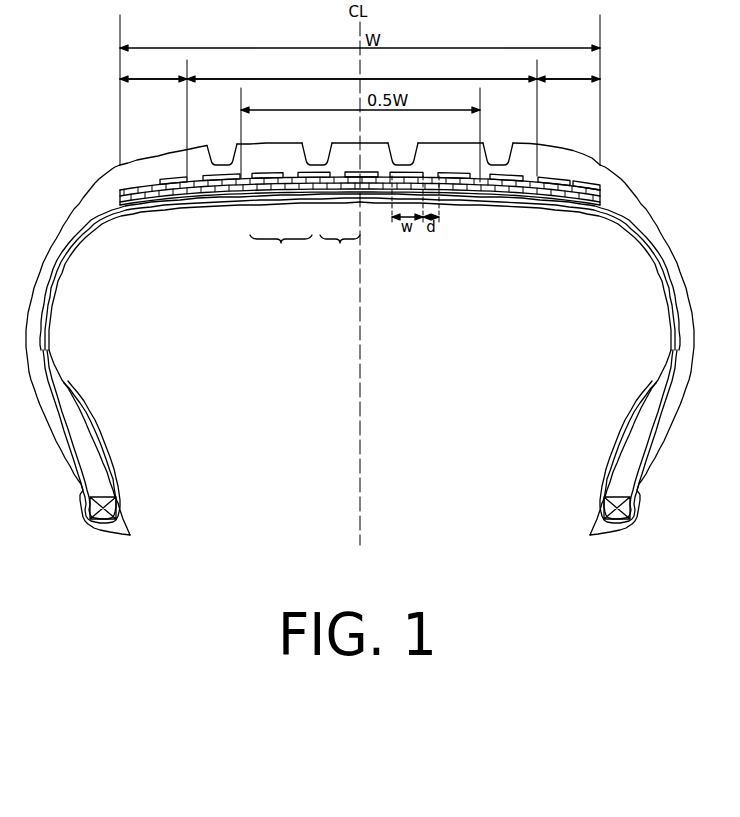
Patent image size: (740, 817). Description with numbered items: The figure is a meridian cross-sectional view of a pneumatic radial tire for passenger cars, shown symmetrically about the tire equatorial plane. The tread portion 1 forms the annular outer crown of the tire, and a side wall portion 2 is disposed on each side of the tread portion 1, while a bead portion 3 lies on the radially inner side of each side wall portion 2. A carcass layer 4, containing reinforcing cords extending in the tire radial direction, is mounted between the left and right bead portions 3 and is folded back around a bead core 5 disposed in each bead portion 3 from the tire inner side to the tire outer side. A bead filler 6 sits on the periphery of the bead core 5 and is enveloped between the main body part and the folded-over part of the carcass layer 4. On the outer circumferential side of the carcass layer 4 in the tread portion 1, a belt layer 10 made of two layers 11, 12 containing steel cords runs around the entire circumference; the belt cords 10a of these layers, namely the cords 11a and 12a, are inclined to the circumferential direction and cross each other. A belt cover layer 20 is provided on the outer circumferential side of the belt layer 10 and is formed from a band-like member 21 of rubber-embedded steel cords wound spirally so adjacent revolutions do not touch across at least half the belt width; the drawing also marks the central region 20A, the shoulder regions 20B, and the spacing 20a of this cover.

The pneumatic tire 1 is at (374, 144).
The sidewall portion 2 is at (689, 291).
The bead portion 3 is at (657, 506).
The carcass 4 is at (672, 322).
The bead core 5 is at (112, 509).
The carcass turn-up portion 6 is at (96, 474).
The belt layer 10 is at (340, 247).
The belt layer 10a is at (281, 247).
The belt ply 11 is at (347, 192).
The belt ply 11a is at (263, 192).
The belt ply 12 is at (332, 192).
The belt ply 12a is at (288, 192).
The tread portion 20 is at (530, 110).
The tread block 20a is at (418, 173).
The tread center region 20A is at (362, 70).
The tread shoulder region 20B is at (360, 70).
The tread rib 21 is at (460, 173).